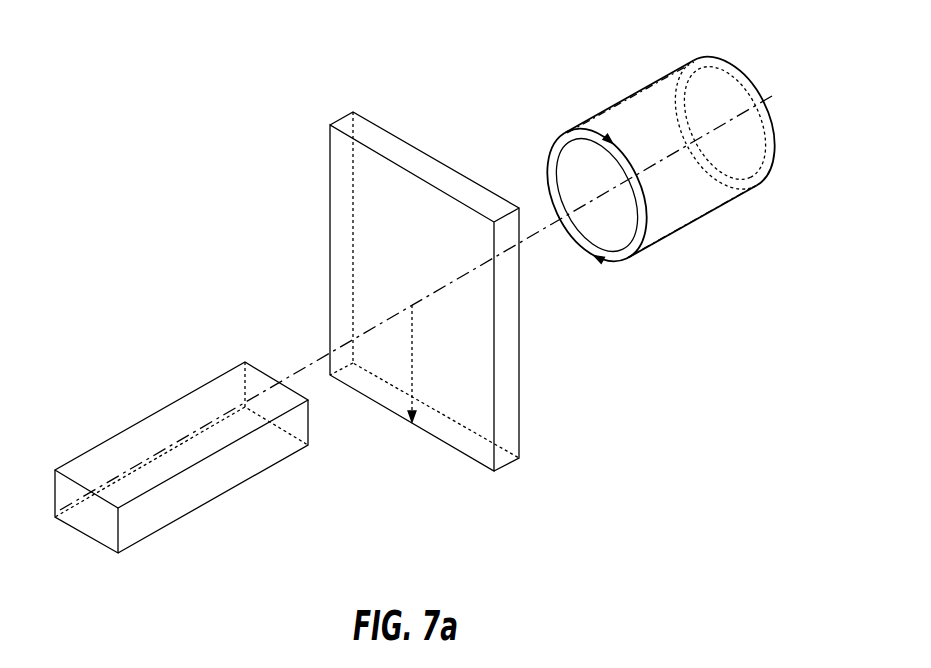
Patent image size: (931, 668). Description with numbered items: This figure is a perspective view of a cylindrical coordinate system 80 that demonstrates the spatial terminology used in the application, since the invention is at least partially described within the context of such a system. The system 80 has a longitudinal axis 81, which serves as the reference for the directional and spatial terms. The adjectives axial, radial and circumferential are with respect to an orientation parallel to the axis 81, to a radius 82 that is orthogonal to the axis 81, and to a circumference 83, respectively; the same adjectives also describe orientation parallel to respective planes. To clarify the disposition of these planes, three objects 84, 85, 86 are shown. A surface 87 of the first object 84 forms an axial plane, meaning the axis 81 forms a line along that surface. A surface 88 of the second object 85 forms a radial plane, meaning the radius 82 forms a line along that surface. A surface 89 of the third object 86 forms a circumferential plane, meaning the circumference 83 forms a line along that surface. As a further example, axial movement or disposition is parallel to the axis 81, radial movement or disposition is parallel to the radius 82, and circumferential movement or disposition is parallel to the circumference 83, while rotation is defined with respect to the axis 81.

The cylindrical coordinate system 80 is at (425, 315).
The longitudinal axis 81 is at (757, 105).
The radius 82 is at (412, 357).
The circumference 83 is at (547, 158).
The object 84 is at (147, 545).
The object 85 is at (528, 459).
The object 86 is at (688, 226).
The surface 87 is at (140, 440).
The surface 88 is at (343, 249).
The surface 89 is at (627, 97).